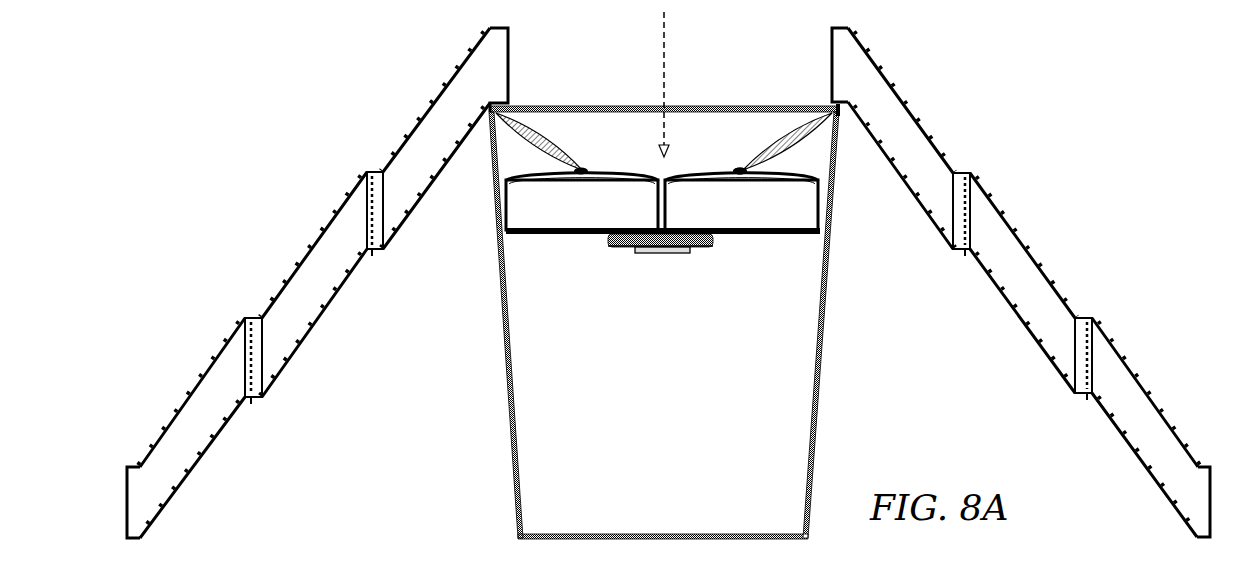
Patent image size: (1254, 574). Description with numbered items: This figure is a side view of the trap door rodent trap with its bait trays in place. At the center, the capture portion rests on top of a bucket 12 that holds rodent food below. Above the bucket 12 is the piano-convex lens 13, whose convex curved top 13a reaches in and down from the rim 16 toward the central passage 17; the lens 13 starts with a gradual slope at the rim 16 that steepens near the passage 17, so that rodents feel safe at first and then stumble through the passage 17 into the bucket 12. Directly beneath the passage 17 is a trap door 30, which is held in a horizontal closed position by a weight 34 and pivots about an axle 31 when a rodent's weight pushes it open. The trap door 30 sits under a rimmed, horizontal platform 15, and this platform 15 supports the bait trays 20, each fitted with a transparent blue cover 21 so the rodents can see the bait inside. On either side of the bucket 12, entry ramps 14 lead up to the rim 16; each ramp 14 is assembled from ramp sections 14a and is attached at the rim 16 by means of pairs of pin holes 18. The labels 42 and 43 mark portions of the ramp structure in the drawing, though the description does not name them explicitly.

The bucket 12 is at (629, 406).
The piano-convex lens 13 is at (643, 127).
The convex curved top 13a is at (540, 122).
The entry ramps 14 is at (668, 278).
The ramp sections 14a is at (458, 143).
The rimmed horizontal platform 15 is at (528, 237).
The rim 16 is at (758, 106).
The passage 17 is at (662, 62).
The pin holes 18 is at (840, 113).
The bait tray 20 is at (560, 218).
The cover 21 is at (800, 170).
The trap door 30 is at (724, 236).
The axle 31 is at (703, 248).
The weight 34 is at (653, 254).
The upper rail 42 is at (1024, 243).
The lower rail 43 is at (1005, 285).